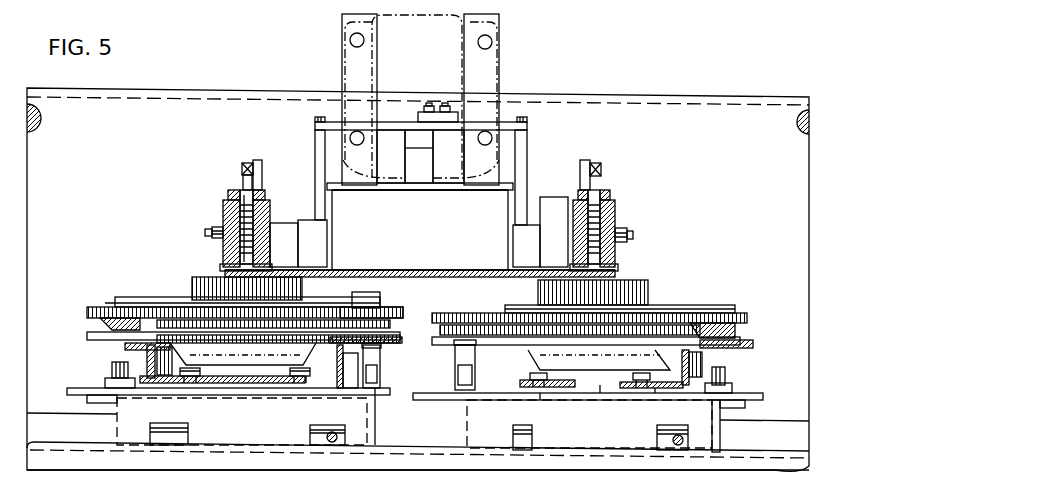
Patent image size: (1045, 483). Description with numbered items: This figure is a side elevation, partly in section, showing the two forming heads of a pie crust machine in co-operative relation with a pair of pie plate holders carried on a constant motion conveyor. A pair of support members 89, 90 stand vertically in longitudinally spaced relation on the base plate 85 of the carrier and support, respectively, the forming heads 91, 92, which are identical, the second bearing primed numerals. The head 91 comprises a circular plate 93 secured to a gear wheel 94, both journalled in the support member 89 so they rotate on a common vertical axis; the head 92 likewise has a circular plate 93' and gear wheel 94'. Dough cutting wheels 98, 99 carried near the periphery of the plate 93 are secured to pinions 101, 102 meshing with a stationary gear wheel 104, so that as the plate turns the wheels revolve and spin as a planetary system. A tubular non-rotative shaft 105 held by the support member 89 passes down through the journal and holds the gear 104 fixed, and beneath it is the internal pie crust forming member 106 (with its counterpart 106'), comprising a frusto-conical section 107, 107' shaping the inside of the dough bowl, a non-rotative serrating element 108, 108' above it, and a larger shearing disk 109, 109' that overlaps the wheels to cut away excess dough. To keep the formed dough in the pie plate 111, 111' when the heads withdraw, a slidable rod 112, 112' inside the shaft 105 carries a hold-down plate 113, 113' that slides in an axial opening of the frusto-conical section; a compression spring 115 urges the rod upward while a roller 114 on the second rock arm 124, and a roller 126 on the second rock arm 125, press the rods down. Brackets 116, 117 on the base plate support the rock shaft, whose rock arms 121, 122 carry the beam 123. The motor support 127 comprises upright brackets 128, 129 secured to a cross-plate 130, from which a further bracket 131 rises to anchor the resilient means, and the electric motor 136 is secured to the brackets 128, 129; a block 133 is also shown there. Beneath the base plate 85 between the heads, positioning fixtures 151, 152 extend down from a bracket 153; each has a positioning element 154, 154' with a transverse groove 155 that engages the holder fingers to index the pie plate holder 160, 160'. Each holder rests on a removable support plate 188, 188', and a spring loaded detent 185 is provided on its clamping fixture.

The base plate 85 is at (472, 270).
The support member 89 is at (218, 259).
The support member 90 is at (620, 215).
The forming head 91 is at (104, 300).
The forming head 92 is at (712, 298).
The circular plate 93 is at (247, 290).
The circular plate 93' is at (589, 305).
The gear wheel 94 is at (229, 288).
The gear wheel 94' is at (604, 285).
The dough cutting wheel 98 is at (402, 340).
The dough cutting wheel 99 is at (90, 340).
The pinion 101 is at (403, 312).
The pinion 102 is at (87, 312).
The stationary gear wheel 104 is at (308, 352).
The tubular non-rotative shaft 105 is at (253, 248).
The internal pie crust forming member 106 is at (333, 384).
The internal pie crust forming member 106' is at (668, 405).
The frusto-conical section 107 is at (243, 378).
The frusto-conical section 107' is at (612, 365).
The serrating element 108 is at (222, 403).
The serrating element 108' is at (570, 309).
The shearing disk 109 is at (418, 456).
The shearing disk 109' is at (592, 319).
The pie plate 111 is at (242, 421).
The pie plate 111' is at (593, 426).
The slidable rod 112 is at (198, 237).
The slidable rod 112' is at (641, 243).
The hold-down plate 113 is at (290, 388).
The hold-down plate 113' is at (617, 402).
The roller 114 is at (243, 163).
The compression spring 115 is at (256, 195).
The bracket 116 is at (284, 222).
The bracket 117 is at (545, 248).
The rock arm 121 is at (316, 147).
The rock arm 122 is at (527, 152).
The beam 123 is at (527, 126).
The second rock arm 124 is at (259, 162).
The second rock arm 125 is at (584, 162).
The roller 126 is at (601, 165).
The motor support 127 is at (411, 194).
The upright bracket 128 is at (342, 26).
The upright bracket 129 is at (499, 29).
The cross-plate 130 is at (453, 190).
The bracket 131 is at (430, 162).
The terminal block 133 is at (418, 117).
The electric motor 136 is at (455, 60).
The positioning fixture 151 is at (381, 364).
The positioning fixture 152 is at (455, 376).
The bracket 153 is at (421, 270).
The positioning element 154 is at (395, 354).
The positioning element 154' is at (454, 350).
The transverse groove 155 is at (378, 392).
The pie plate holder 160 is at (171, 415).
The pie plate holder 160' is at (554, 417).
The spring loaded detent 185 is at (112, 370).
The removable support plate 188 is at (223, 402).
The removable support plate 188' is at (590, 385).